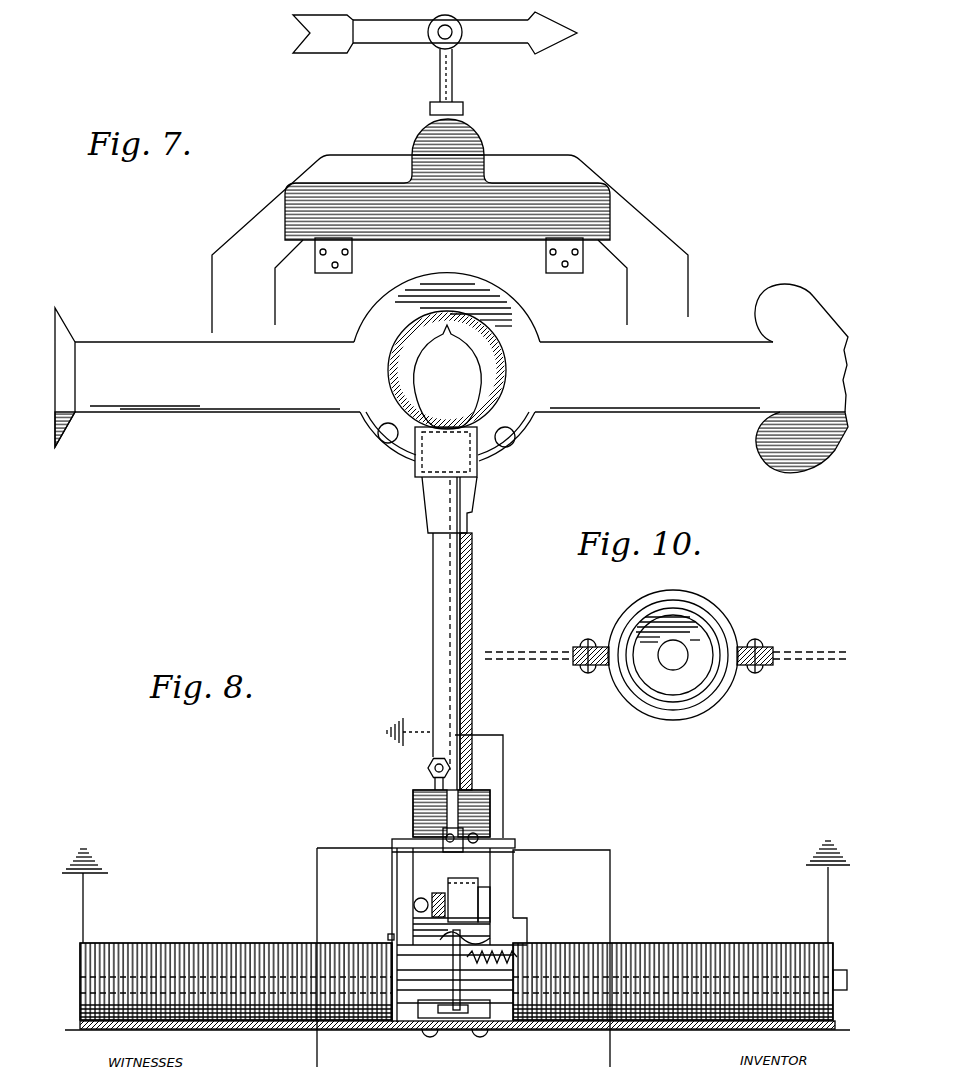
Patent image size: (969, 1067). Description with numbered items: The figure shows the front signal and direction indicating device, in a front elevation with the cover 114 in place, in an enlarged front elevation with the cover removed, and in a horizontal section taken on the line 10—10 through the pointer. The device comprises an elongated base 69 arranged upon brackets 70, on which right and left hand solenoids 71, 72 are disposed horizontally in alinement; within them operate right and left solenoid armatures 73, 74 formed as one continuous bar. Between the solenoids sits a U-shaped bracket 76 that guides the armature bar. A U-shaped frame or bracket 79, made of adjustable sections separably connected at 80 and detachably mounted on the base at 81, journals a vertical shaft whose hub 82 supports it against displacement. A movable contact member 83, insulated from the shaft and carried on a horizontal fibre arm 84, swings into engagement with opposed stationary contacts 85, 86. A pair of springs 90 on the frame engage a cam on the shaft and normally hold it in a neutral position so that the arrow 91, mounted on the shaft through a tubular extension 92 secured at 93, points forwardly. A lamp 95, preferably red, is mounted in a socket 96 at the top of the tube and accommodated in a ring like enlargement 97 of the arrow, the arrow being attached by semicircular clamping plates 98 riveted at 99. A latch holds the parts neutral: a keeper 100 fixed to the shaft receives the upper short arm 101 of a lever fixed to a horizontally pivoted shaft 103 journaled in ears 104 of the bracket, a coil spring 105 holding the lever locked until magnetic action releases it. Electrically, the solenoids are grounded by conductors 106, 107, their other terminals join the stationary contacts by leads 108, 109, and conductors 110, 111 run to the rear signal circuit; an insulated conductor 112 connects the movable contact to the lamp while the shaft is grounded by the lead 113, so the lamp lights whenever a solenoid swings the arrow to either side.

In FIG. 7, the line 10— 10 is at (397, 447).
In FIG. 8, the base 69 is at (243, 1030).
In FIG. 7, the brackets 70 is at (327, 262).
In FIG. 8, the right hand solenoid 71 is at (210, 963).
In FIG. 8, the left hand solenoid 72 is at (682, 957).
In FIG. 8, the right solenoid armature 73 is at (132, 973).
In FIG. 8, the left solenoid armature 74 is at (733, 970).
In FIG. 8, the U-shaped bracket 76 is at (390, 1027).
In FIG. 8, the U-shaped frame or bracket 79 is at (483, 792).
In FIG. 8, the separable connection 80 is at (470, 830).
In FIG. 8, the detachable mounting 81 is at (480, 1017).
In FIG. 8, the hub 82 is at (447, 1003).
In FIG. 8, the movable contact member 83 is at (517, 845).
In FIG. 8, the horizontal fibre arm 84 is at (505, 840).
In FIG. 8, the stationary contact 85 is at (495, 875).
In FIG. 8, the stationary contact 86 is at (392, 845).
In FIG. 8, the springs 90 is at (483, 895).
In FIG. 7, the arrow 91 is at (510, 35).
In FIG. 7, the tubular extension 92 is at (440, 88).
In FIG. 8, the tubular extension 92 is at (440, 598).
In FIG. 8, the connection 93 is at (427, 767).
In FIG. 7, the lamp or incandescent electric light bulb 95 is at (450, 30).
In FIG. 7, the socket 96 is at (422, 450).
In FIG. 7, the ring like or apertured enlargement 97 is at (490, 302).
In FIG. 10, the ring like or apertured enlargement 97 is at (586, 667).
In FIG. 10, the semicircular clamping plates 98 is at (713, 610).
In FIG. 10, the riveted ends 99 is at (590, 645).
In FIG. 8, the keeper 100 is at (490, 927).
In FIG. 8, the upper short arm 101 is at (493, 937).
In FIG. 8, the horizontally pivoted shaft 103 is at (410, 947).
In FIG. 8, the apertured extension or ears 104 is at (392, 930).
In FIG. 8, the coil spring 105 is at (517, 940).
In FIG. 8, the conductor 106 is at (87, 905).
In FIG. 8, the conductor 107 is at (828, 880).
In FIG. 8, the conductor or lead 108 is at (388, 937).
In FIG. 8, the conductor or lead 109 is at (490, 910).
In FIG. 8, the conductor 110 is at (317, 912).
In FIG. 8, the conductor 111 is at (612, 870).
In FIG. 8, the insulated conductor 112 is at (453, 562).
In FIG. 8, the lead 113 is at (409, 719).
In FIG. 7, the cover 114 is at (462, 170).